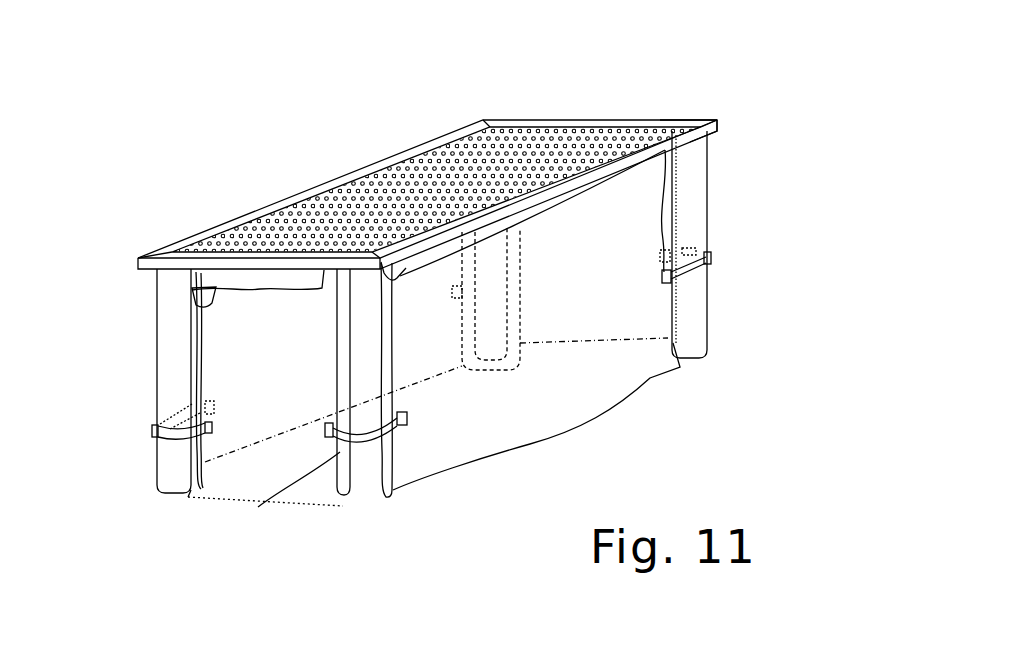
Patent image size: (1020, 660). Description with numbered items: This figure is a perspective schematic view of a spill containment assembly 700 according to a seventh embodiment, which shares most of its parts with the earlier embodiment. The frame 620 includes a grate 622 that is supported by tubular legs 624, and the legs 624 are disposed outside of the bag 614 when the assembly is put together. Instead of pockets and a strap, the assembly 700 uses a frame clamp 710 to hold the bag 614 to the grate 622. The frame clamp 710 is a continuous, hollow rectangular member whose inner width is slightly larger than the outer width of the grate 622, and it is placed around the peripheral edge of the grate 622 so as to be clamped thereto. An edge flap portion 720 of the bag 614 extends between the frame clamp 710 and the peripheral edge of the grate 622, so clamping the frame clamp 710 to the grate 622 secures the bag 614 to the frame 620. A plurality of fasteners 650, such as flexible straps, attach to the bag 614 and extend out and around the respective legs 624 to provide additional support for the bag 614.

The spill containment assembly 700 is at (248, 128).
The frame 620 is at (622, 118).
The grate 622 is at (517, 140).
The frame clamp 710 is at (684, 120).
The tubular legs 624 is at (707, 190).
The edge flap portion 720 is at (210, 300).
The bag 614 is at (588, 425).
The fasteners 650 is at (175, 436).